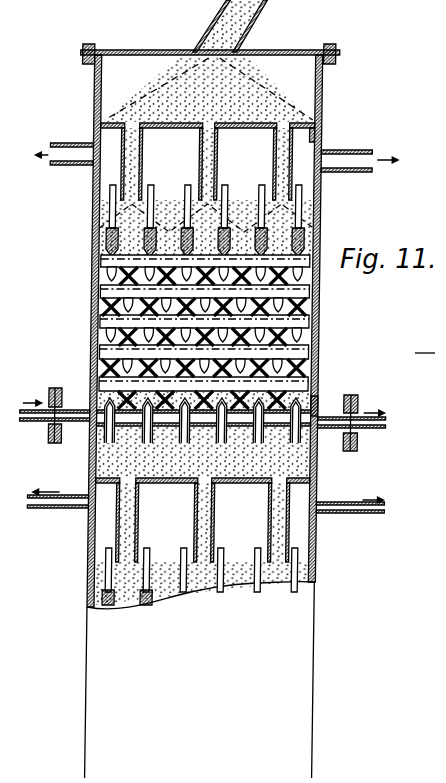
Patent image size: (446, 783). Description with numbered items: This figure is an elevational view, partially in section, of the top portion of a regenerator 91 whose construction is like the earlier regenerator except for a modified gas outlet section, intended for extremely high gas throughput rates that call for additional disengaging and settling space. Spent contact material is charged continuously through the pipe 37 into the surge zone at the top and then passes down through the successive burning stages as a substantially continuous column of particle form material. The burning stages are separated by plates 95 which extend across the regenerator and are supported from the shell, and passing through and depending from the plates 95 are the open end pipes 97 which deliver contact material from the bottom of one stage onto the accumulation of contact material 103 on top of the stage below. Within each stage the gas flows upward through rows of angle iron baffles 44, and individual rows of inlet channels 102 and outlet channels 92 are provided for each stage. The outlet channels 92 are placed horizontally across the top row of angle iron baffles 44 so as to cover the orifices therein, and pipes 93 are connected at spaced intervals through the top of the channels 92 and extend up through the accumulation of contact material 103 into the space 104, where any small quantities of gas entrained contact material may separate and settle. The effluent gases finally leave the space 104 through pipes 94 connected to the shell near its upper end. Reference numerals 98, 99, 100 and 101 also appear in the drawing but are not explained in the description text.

The pipe 37 is at (206, 20).
The angle iron baffles 44 is at (313, 292).
The regenerator 91 is at (93, 290).
The outlet channels 92 is at (110, 238).
The pipes 93 is at (303, 203).
The pipes 94 is at (74, 143).
The plates 95 is at (118, 126).
The open end pipes 97 is at (123, 167).
The pipe 98 is at (322, 134).
The flange 99 is at (357, 398).
The pipe connection 100 is at (322, 398).
The flanged pipe 101 is at (82, 368).
The inlet channels 102 is at (288, 447).
The accumulation of contact material 103 is at (108, 218).
The space 104 is at (302, 175).